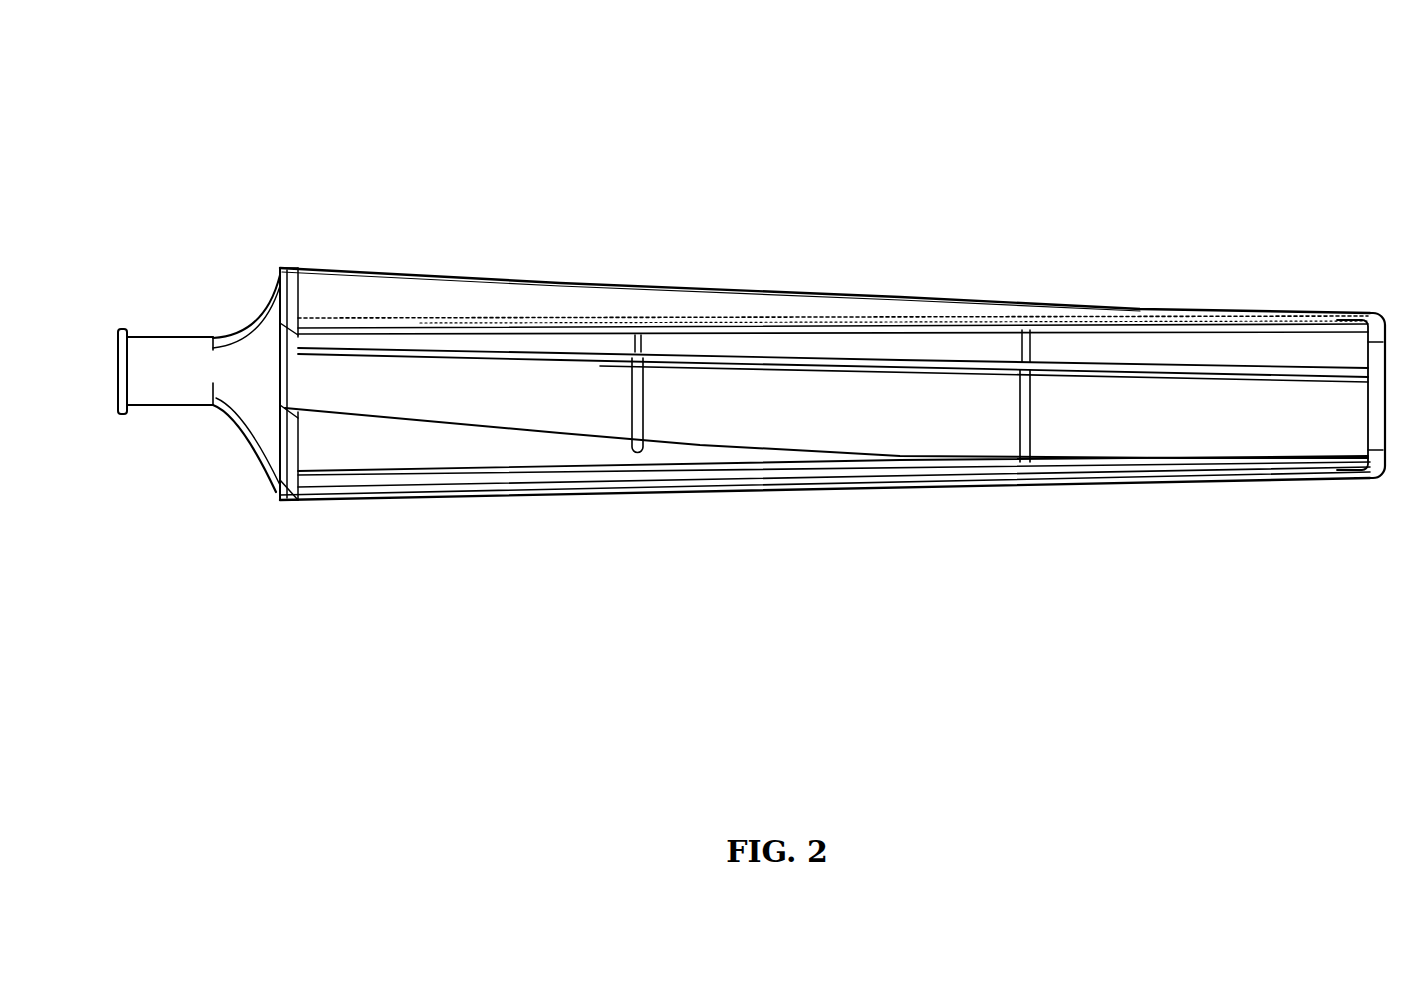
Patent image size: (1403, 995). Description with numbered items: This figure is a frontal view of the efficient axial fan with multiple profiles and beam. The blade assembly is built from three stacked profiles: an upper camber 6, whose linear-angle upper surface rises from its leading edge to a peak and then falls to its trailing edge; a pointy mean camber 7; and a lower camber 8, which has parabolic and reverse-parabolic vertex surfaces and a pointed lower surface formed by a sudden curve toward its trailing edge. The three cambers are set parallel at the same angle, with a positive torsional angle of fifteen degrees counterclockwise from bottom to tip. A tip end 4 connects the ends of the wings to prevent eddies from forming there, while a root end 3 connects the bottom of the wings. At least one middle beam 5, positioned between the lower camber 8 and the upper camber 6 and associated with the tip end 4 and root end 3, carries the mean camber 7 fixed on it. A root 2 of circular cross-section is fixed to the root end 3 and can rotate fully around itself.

The root 2 is at (165, 337).
The root end 3 is at (273, 413).
The tip end 4 is at (1367, 405).
The middle beam 5 is at (633, 422).
The upper camber 6 is at (580, 268).
The mean camber 7 is at (1203, 375).
The lower camber 8 is at (457, 501).